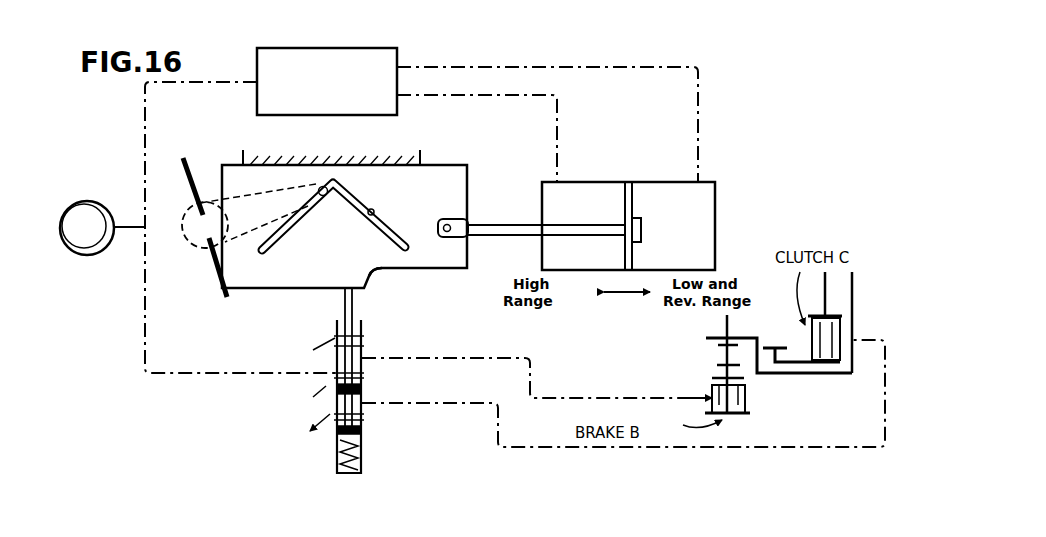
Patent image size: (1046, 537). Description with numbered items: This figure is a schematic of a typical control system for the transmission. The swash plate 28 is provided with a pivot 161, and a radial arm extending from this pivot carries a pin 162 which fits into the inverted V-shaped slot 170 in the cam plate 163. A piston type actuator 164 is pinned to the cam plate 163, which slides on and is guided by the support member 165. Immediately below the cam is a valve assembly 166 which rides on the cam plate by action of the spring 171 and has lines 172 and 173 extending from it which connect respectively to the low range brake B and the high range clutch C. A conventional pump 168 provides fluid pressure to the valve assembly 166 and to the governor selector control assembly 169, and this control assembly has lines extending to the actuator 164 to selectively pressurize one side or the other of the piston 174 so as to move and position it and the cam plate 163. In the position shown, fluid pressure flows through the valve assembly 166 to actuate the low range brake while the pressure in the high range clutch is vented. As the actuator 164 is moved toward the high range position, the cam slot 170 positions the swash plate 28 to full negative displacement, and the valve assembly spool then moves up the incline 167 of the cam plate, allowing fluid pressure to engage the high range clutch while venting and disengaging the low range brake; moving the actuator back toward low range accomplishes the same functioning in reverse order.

The swash plate 28 is at (203, 137).
The pivot 161 is at (188, 248).
The pin 162 is at (325, 196).
The cam plate 163 is at (445, 165).
The piston type actuator 164 is at (686, 162).
The support member 165 is at (245, 157).
The valve assembly 166 is at (312, 398).
The incline 167 is at (373, 272).
The pump 168 is at (124, 189).
The governor selector control assembly 169 is at (398, 50).
The inverted V-shaped slot 170 is at (374, 209).
The spring 171 is at (362, 450).
The line 172 is at (440, 358).
The line 173 is at (430, 406).
The piston 174 is at (642, 243).